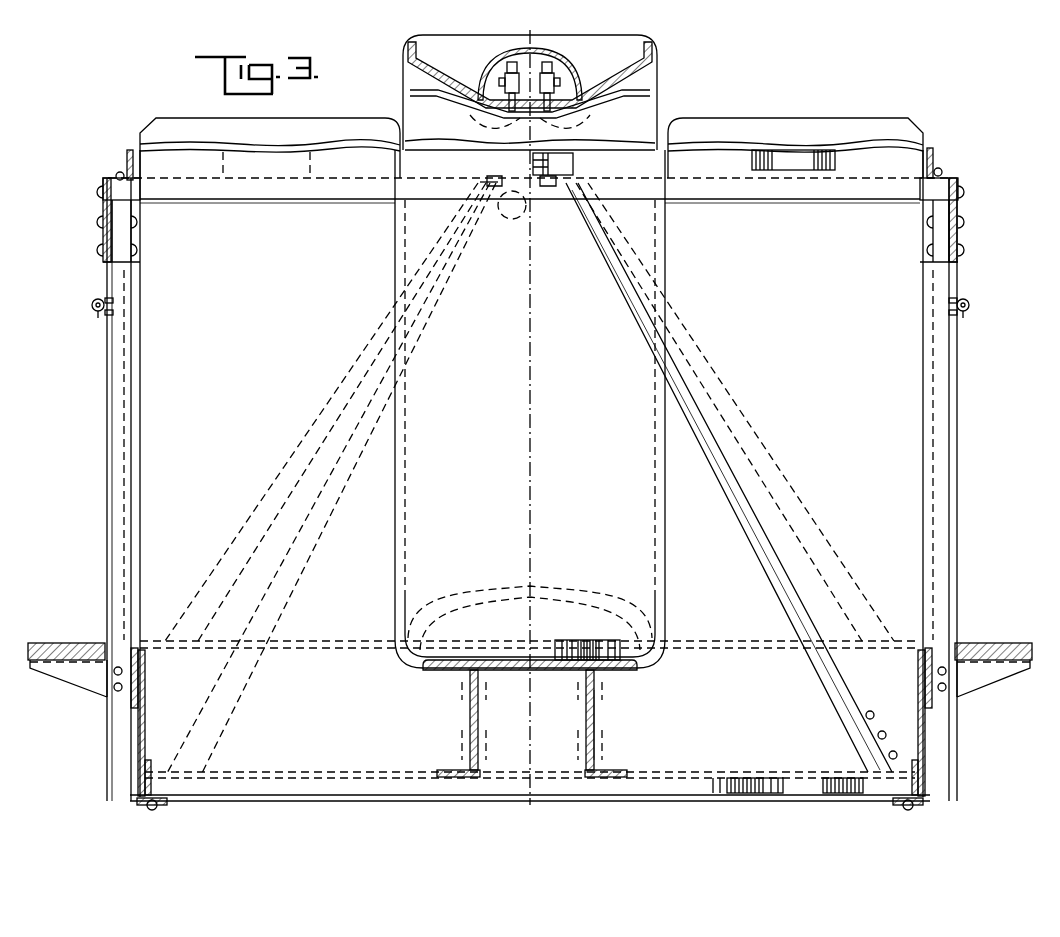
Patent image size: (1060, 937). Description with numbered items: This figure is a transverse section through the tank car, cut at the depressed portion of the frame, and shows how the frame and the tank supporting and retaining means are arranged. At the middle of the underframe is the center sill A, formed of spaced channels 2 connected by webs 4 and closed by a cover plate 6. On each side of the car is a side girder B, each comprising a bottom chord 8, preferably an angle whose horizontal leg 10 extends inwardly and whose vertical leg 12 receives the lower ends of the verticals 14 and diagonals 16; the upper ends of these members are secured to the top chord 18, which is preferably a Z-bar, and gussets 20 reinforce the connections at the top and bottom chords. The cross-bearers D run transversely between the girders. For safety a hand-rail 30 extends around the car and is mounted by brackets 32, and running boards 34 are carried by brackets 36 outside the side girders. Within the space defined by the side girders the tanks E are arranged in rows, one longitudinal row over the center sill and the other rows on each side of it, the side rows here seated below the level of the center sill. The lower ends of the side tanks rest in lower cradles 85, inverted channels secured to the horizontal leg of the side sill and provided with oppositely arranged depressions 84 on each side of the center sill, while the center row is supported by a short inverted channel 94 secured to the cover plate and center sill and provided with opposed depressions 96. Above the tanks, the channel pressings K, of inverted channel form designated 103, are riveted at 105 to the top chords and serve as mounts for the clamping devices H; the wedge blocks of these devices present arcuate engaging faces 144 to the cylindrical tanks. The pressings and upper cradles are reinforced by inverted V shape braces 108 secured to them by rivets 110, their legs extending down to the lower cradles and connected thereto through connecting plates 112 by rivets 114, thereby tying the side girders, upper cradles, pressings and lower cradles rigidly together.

The spaced channels 2 is at (470, 736).
The webs 4 is at (555, 742).
The cover plate 6 is at (553, 671).
The bottom chord 8 is at (137, 806).
The horizontal leg 10 is at (158, 805).
The vertical leg 12 is at (137, 778).
The verticals 14 is at (108, 517).
The diagonals 16 is at (107, 277).
The top chord 18 is at (127, 158).
The gussets 20 is at (103, 210).
The hand-rail 30 is at (92, 306).
The brackets 32 is at (98, 316).
The running boards 34 is at (62, 643).
The brackets 36 is at (88, 676).
The depressions 84 is at (760, 782).
The lower cradles 85 is at (712, 780).
The short inverted channel 94 is at (563, 640).
The opposed depressions 96 is at (580, 648).
The inverted channel pressing 103 is at (846, 200).
The rivets 105 is at (115, 177).
The inverted V shape braces 108 is at (272, 505).
The rivets 110 is at (548, 181).
The connecting plates 112 is at (877, 723).
The rivets 114 is at (895, 750).
The engaging faces 144 is at (752, 160).
The center sill A is at (582, 708).
The side girders B is at (107, 440).
The cross-bearers D is at (137, 690).
The tanks E is at (291, 122).
The clamping devices H is at (575, 165).
The channel pressings K is at (753, 201).